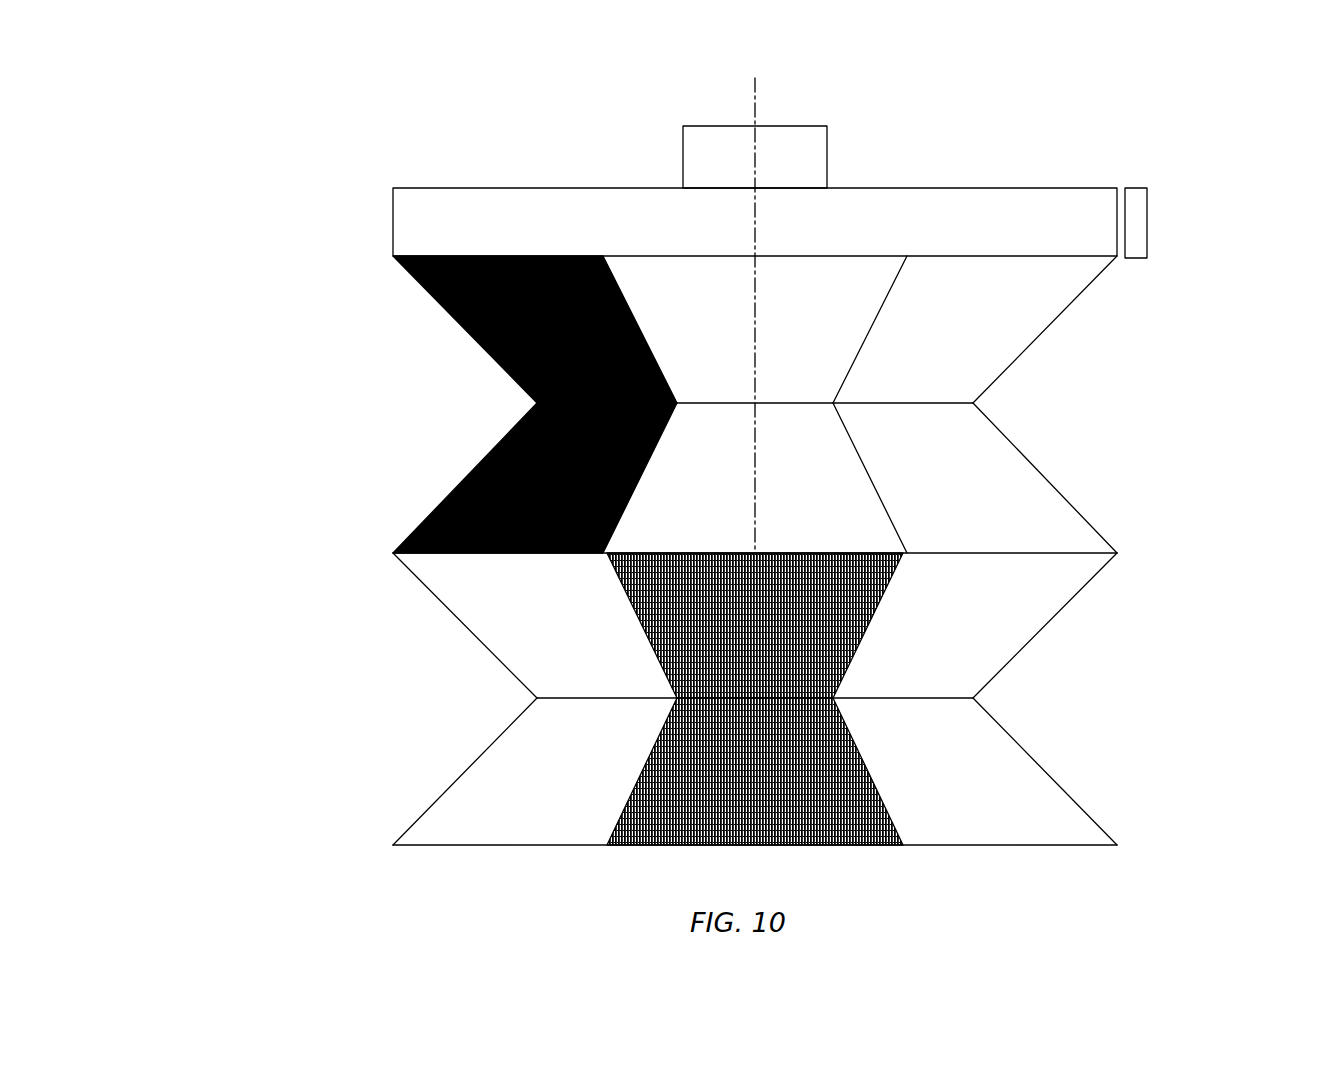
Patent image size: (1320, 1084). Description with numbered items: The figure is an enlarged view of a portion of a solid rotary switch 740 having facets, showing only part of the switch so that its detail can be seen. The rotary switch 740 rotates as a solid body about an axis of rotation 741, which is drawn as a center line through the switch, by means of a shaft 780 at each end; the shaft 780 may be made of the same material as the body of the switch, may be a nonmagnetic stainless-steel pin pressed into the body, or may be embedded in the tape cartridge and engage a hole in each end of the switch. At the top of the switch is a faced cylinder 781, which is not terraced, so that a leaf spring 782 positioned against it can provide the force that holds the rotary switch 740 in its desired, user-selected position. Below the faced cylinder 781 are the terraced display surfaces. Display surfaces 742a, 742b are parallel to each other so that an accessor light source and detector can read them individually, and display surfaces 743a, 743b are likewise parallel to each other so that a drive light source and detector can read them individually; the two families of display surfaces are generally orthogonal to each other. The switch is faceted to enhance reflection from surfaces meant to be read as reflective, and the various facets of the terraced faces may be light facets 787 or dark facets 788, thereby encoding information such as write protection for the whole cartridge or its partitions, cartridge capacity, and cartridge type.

The rotary switch 740 is at (295, 377).
The axis of rotation 741 is at (758, 96).
The shaft 780 is at (681, 138).
The faced cylinder 781 is at (392, 240).
The leaf spring 782 is at (1148, 235).
The display surface 743a is at (470, 333).
The display surface 742a is at (468, 475).
The display surface 743b is at (467, 626).
The display surface 742b is at (468, 773).
The light facets 787 is at (1008, 773).
The dark facets 788 is at (860, 647).